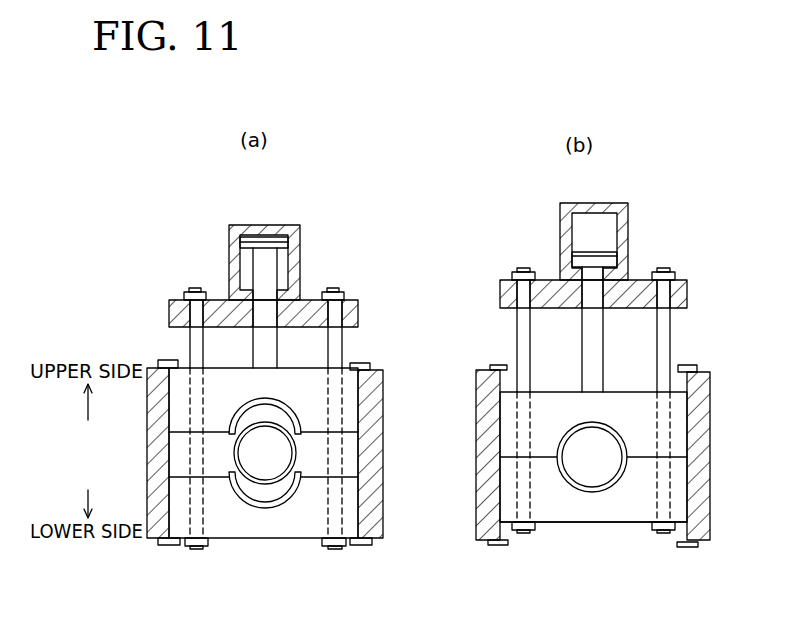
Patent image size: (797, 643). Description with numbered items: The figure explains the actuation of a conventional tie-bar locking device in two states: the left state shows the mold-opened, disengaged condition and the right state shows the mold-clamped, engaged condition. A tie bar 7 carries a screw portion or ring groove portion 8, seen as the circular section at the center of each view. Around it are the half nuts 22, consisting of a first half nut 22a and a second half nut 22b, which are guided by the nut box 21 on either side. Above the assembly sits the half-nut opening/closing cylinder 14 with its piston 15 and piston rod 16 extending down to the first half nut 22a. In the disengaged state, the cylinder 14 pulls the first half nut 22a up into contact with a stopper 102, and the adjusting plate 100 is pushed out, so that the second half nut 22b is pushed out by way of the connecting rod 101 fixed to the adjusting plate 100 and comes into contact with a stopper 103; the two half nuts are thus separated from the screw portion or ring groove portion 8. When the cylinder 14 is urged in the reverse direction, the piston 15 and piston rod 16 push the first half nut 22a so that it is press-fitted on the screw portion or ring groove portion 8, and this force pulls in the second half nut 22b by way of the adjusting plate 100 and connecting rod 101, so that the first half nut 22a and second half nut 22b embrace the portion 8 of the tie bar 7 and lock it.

The half-nut opening/closing cylinder 14 is at (249, 225).
The piston 15 is at (288, 242).
The piston rod 16 is at (268, 346).
The adjusting plate 100 is at (357, 317).
The connecting rod 101 is at (192, 342).
The stopper 102 is at (168, 360).
The stopper 103 is at (172, 546).
The nut box 21 is at (157, 430).
The half nuts 22 is at (301, 543).
The first half nut 22a is at (230, 388).
The second half nut 22b is at (222, 520).
The tie bar 7 is at (273, 463).
The screw portion or ring groove portion 8 is at (257, 490).